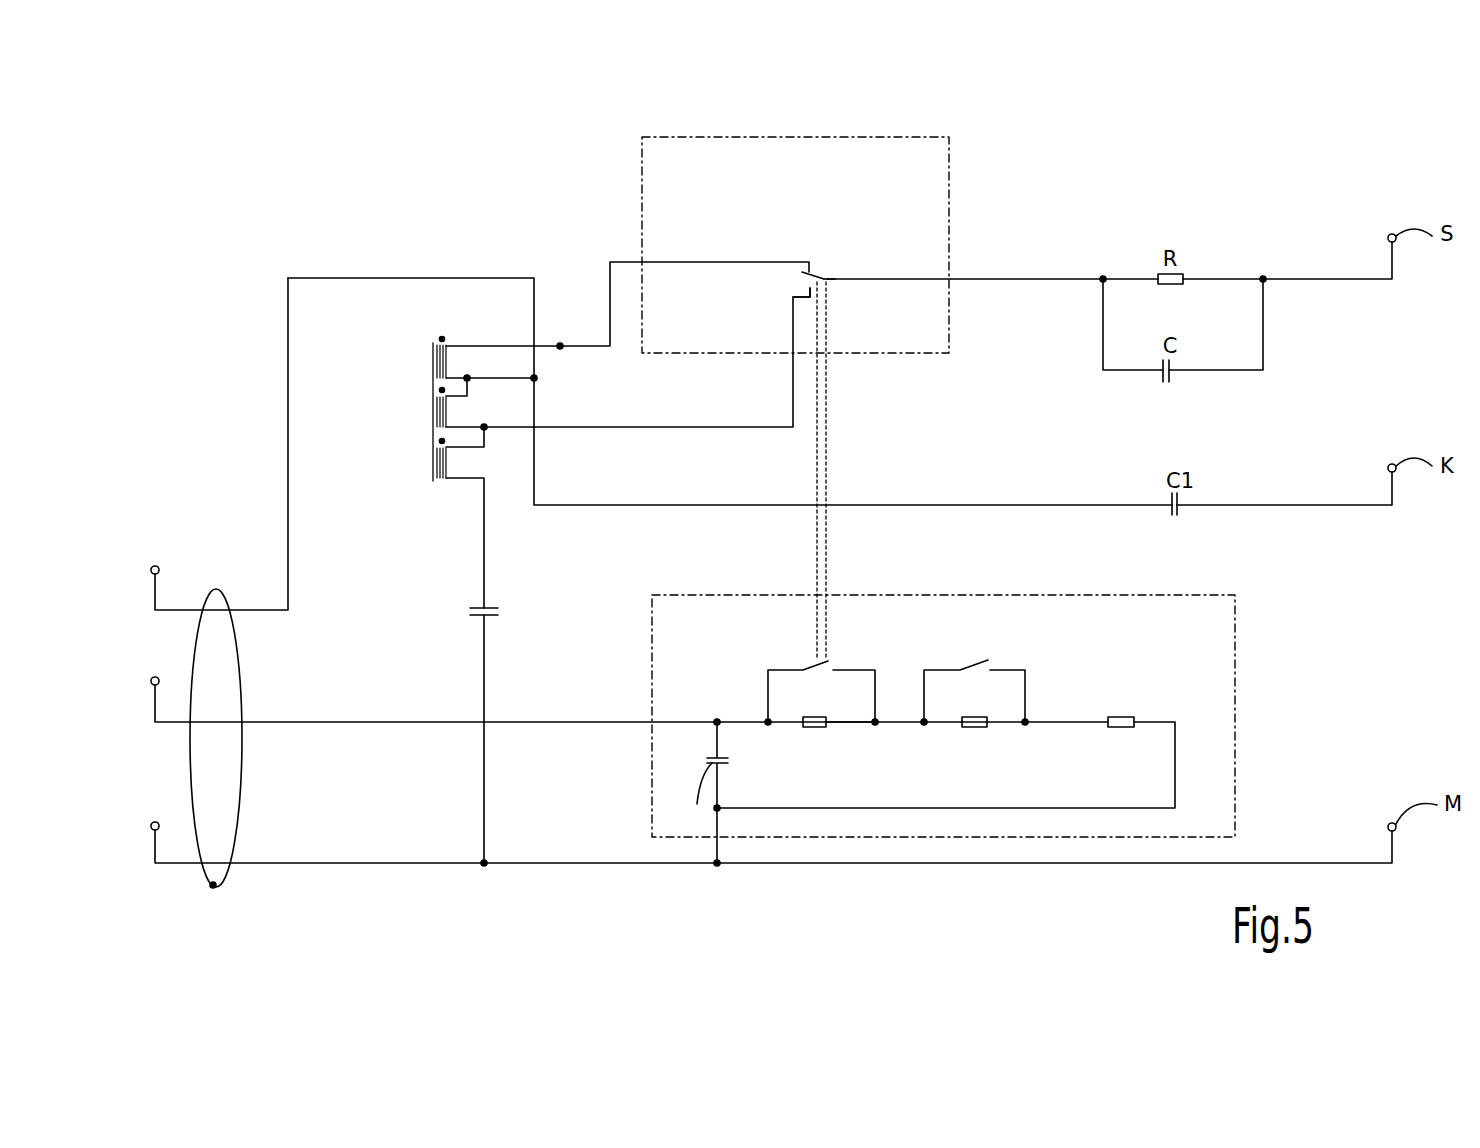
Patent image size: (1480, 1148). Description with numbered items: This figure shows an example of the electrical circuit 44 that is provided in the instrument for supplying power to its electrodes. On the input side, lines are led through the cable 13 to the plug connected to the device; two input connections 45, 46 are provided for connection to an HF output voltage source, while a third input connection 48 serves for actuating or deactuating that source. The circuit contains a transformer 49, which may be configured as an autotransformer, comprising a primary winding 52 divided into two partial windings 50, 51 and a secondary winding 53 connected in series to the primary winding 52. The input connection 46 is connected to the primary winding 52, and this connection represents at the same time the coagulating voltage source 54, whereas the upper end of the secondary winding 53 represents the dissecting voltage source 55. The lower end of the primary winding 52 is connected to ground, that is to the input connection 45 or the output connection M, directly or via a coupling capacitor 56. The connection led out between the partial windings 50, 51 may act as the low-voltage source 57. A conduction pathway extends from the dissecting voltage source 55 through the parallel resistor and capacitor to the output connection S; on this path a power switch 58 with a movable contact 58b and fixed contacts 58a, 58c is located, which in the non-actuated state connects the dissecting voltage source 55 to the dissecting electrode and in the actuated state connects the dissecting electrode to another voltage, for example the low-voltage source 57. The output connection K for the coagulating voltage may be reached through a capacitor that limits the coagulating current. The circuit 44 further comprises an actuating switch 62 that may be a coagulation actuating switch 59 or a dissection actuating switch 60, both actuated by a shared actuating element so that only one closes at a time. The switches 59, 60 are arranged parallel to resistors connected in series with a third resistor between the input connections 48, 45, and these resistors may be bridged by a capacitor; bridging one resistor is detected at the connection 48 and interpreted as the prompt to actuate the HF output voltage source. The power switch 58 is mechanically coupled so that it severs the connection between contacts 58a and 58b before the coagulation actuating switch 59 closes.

The cable 13 is at (213, 886).
The electrical circuit 44 is at (1120, 153).
The input connection 45 is at (155, 821).
The input connection 46 is at (155, 565).
The third input connection 48 is at (155, 676).
The transformer 49 is at (413, 302).
The first partial winding 50 is at (428, 412).
The second partial winding 51 is at (410, 459).
The primary winding 52 is at (383, 434).
The secondary winding 53 is at (428, 363).
The coagulating voltage source 54 is at (537, 378).
The dissecting voltage source 55 is at (560, 345).
The coupling capacitor 56 is at (500, 602).
The low-voltage source 57 is at (563, 430).
The power switch 58 is at (795, 361).
The fixed contact 58a is at (771, 262).
The movable contact 58b is at (845, 275).
The fixed contact 58c is at (793, 307).
The coagulation actuating switch 59 is at (845, 652).
The dissection actuating switch 60 is at (965, 660).
The actuating switch 62 is at (943, 699).